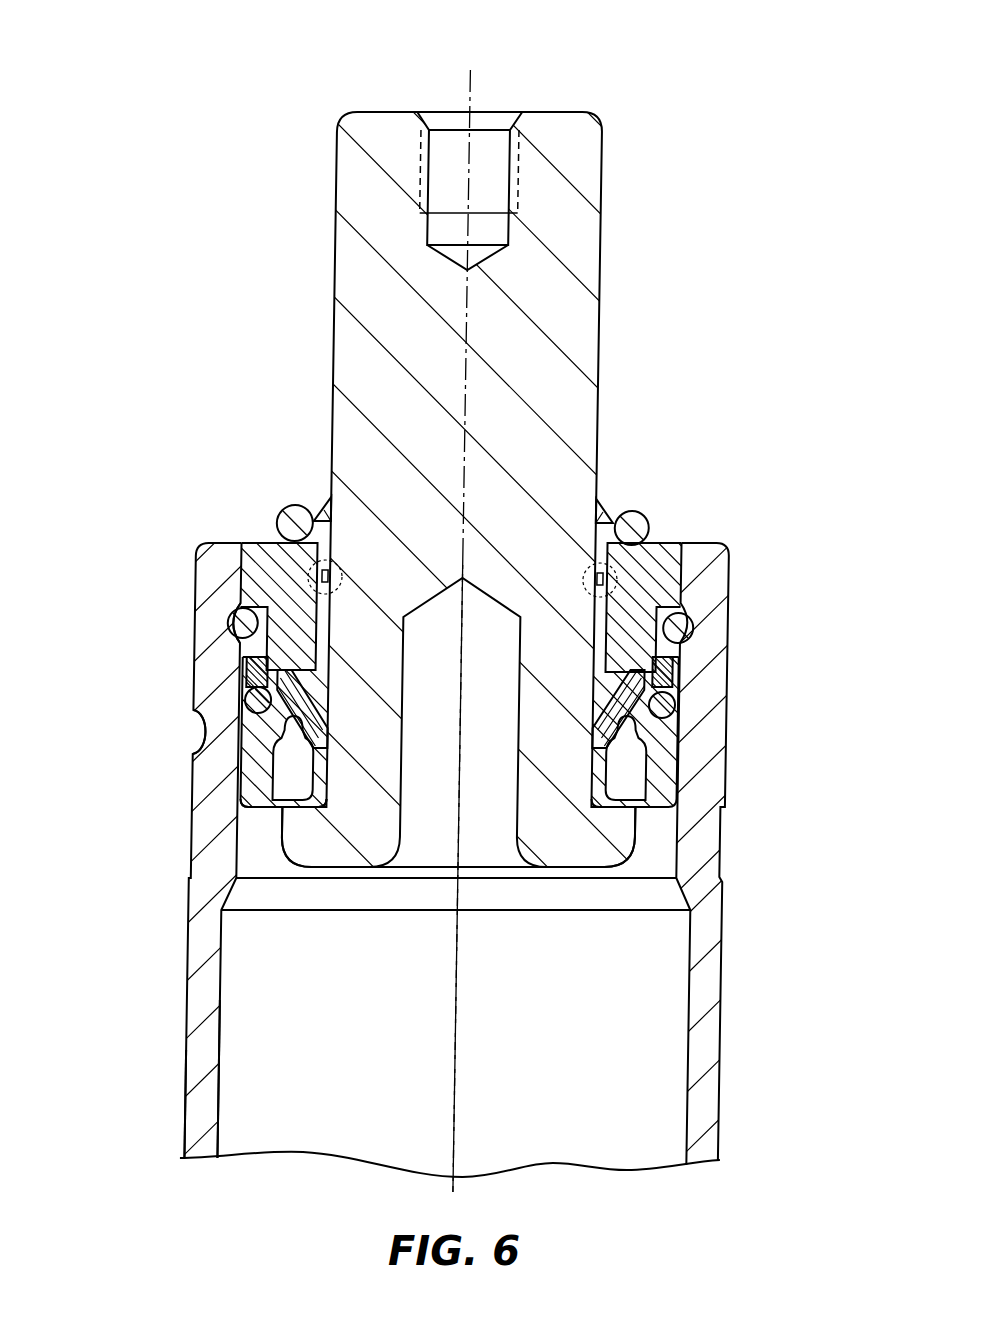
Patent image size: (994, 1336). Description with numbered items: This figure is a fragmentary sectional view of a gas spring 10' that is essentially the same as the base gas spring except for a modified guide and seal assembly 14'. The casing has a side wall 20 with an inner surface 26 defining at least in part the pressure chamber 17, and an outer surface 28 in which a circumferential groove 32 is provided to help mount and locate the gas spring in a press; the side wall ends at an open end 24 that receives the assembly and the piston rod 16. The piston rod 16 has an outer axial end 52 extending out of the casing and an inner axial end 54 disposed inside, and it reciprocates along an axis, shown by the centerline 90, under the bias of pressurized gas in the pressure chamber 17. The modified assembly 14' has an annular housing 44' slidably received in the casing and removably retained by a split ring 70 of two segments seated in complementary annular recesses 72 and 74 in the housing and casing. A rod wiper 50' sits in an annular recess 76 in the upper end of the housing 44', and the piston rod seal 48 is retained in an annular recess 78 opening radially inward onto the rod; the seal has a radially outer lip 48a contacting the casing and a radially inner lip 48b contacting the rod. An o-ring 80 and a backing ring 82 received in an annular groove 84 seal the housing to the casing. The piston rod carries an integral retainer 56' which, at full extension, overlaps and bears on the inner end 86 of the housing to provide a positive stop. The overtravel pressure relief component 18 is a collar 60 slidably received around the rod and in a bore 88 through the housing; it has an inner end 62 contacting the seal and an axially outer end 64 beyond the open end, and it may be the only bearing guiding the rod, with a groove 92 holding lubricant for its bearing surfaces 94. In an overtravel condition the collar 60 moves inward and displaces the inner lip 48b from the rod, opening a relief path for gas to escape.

The gas spring 10' is at (269, 631).
The modified guide and seal assembly 14' is at (221, 820).
The piston rod 16 is at (630, 158).
The pressure chamber 17 is at (593, 1008).
The overtravel pressure relief component 18 is at (314, 583).
The side wall 20 is at (221, 1022).
The open end 24 is at (713, 510).
The inner surface 26 is at (235, 1076).
The outer surface 28 is at (206, 1137).
The circumferential groove 32 is at (217, 725).
The annular housing 44' is at (201, 770).
The piston rod seal 48 is at (685, 688).
The radially outer lip 48a is at (667, 762).
The radially inner lip 48b is at (662, 790).
The rod wiper 50' is at (648, 490).
The outer axial end 52 is at (439, 98).
The inner axial end 54 is at (370, 985).
The integral retainer 56' is at (477, 884).
The collar 60 is at (621, 592).
The inner end 62 is at (664, 733).
The axially outer end 64 is at (298, 507).
The split ring 70 is at (240, 630).
The annular recess 72 is at (254, 605).
The annular recess 74 is at (704, 628).
The annular recess 76 is at (309, 548).
The annular recess 78 is at (323, 690).
The o-ring 80 is at (266, 698).
The backing ring 82 is at (268, 683).
The annular groove 84 is at (259, 733).
The inner end 86 is at (284, 810).
The bore 88 is at (610, 637).
The centerline axis 90 is at (479, 1082).
The groove 92 is at (610, 583).
The bearing surfaces 94 is at (347, 618).